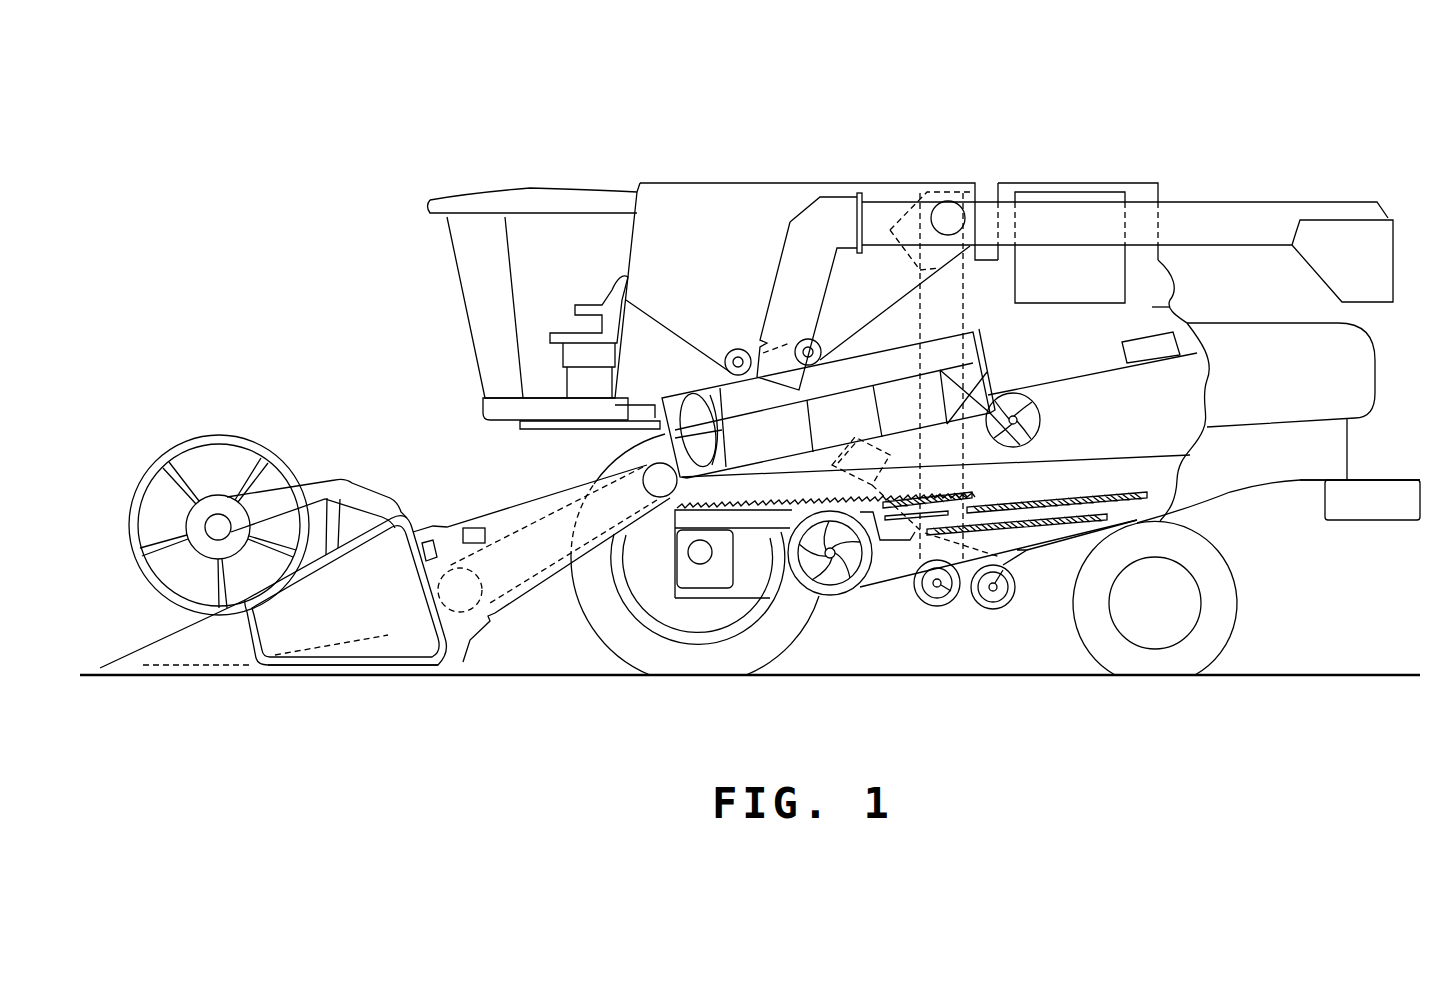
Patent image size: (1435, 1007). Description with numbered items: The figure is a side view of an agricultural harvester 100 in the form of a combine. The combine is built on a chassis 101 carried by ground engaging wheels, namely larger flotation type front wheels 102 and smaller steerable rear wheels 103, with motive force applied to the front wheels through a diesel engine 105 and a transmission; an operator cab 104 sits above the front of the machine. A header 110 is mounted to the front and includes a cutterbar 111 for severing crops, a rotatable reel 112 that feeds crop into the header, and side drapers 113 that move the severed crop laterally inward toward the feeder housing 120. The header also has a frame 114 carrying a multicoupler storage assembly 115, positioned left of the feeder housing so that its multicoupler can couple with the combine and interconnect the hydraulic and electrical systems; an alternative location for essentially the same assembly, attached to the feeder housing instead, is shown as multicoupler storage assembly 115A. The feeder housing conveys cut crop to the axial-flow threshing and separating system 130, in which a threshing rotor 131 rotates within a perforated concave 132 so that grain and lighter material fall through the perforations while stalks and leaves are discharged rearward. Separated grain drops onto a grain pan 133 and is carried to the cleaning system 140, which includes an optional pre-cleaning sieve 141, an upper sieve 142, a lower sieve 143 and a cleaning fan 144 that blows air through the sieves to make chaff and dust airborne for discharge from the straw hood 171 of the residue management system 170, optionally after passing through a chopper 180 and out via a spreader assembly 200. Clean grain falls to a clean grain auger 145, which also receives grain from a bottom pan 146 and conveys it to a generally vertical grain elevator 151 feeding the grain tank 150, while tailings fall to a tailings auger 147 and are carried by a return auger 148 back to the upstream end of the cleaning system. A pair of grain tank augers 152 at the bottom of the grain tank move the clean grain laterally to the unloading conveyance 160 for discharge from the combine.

The agricultural harvester 100 is at (523, 172).
The chassis 101 is at (1194, 513).
The front wheels 102 is at (603, 630).
The rear wheels 103 is at (1232, 617).
The operator cab 104 is at (458, 283).
The diesel engine 105 is at (1058, 195).
The header 110 is at (178, 425).
The cutterbar 111 is at (178, 668).
The reel 112 is at (219, 435).
The side drapers 113 is at (340, 648).
The frame 114 is at (450, 668).
The multicoupler storage assembly 115 is at (412, 556).
The multicoupler storage assembly 115A is at (462, 526).
The feeder housing 120 is at (513, 500).
The threshing and separating system 130 is at (856, 458).
The threshing rotor 131 is at (690, 404).
The concave 132 is at (855, 385).
The grain pan 133 is at (676, 530).
The cleaning system 140 is at (933, 580).
The pre-cleaning sieve 141 is at (972, 498).
The upper sieve 142 is at (1073, 495).
The lower sieve 143 is at (1045, 530).
The cleaning fan 144 is at (830, 597).
The clean grain auger 145 is at (937, 607).
The bottom pan 146 is at (1080, 545).
The tailings auger 147 is at (993, 610).
The return auger 148 is at (903, 490).
The grain tank 150 is at (839, 340).
The grain elevator 151 is at (970, 318).
The grain tank augers 152 is at (739, 349).
The unloading conveyance 160 is at (1248, 212).
The residue management system 170 is at (1323, 542).
The straw hood 171 is at (1356, 366).
The chopper 180 is at (1121, 357).
The spreader assembly 200 is at (1397, 478).